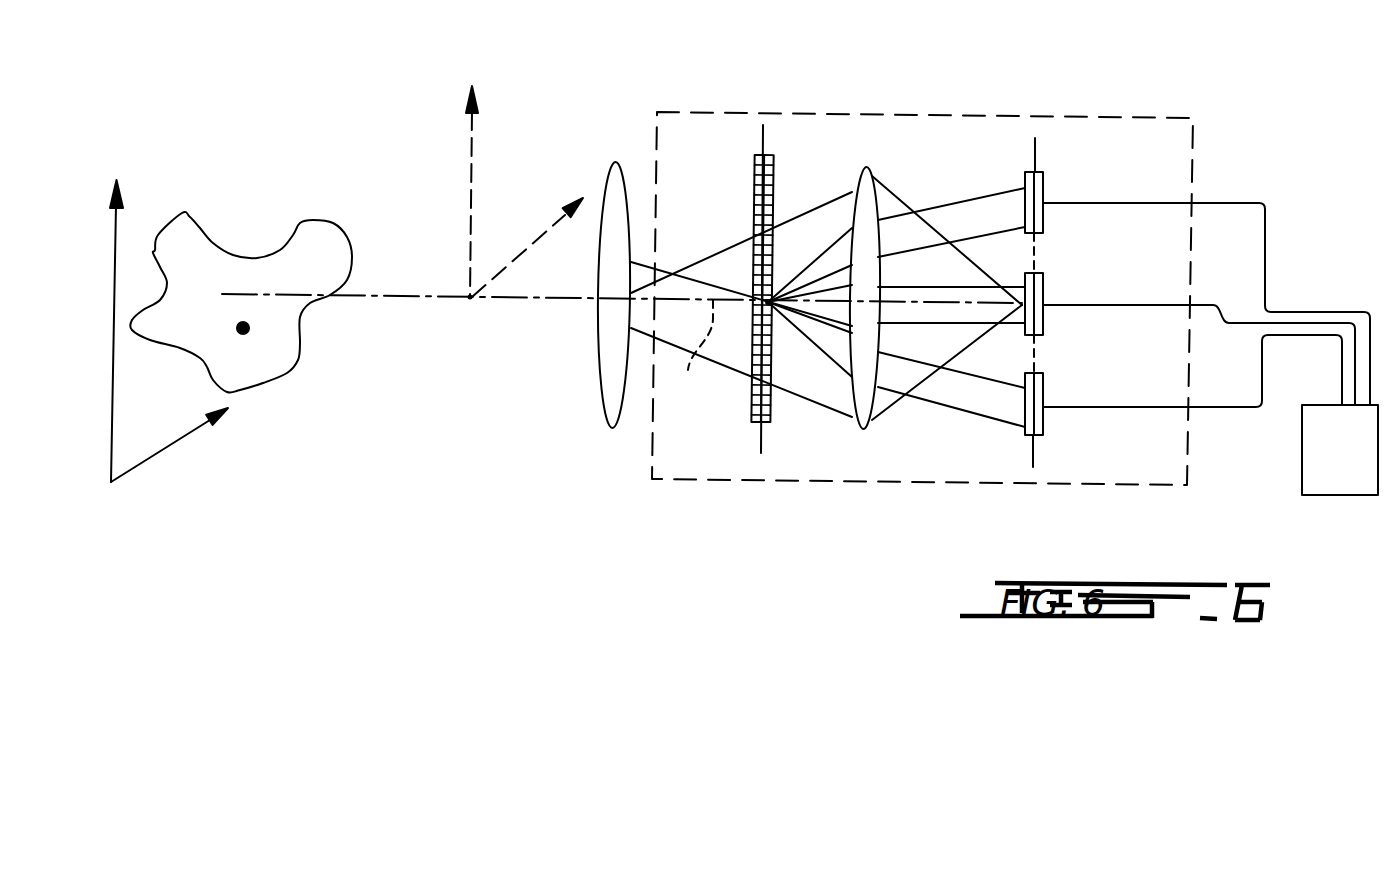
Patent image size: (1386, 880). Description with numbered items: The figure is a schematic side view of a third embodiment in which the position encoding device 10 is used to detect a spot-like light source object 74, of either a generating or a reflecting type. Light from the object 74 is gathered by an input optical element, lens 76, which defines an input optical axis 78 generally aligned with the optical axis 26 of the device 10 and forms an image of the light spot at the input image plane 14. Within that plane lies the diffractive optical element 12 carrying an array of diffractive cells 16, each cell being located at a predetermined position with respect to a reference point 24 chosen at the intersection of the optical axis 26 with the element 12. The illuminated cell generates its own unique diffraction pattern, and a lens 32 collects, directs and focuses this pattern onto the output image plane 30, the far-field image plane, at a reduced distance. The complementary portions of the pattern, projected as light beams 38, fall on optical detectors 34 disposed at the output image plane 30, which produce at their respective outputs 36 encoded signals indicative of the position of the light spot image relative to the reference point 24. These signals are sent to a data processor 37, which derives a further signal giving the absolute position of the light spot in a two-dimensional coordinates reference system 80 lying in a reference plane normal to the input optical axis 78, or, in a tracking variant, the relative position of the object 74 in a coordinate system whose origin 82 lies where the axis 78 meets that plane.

The position encoding device 10 is at (905, 110).
The diffractive optical element 12 is at (753, 207).
The input image plane 14 is at (757, 140).
The diffractive cells 16 is at (772, 194).
The reference point 24 is at (762, 305).
The optical axis 26 is at (688, 355).
The output image plane 30 is at (1038, 150).
The lens 32 is at (878, 182).
The optical detectors 34 is at (1047, 227).
The outputs 36 is at (1047, 197).
The data processor 37 is at (1362, 475).
The light beams 38 is at (975, 210).
The spot-like light source object 74 is at (250, 334).
The input optical element 76 is at (613, 168).
The input optical axis 78 is at (553, 300).
The two-dimensional coordinates reference system 80 is at (468, 178).
The origin 82 is at (470, 298).